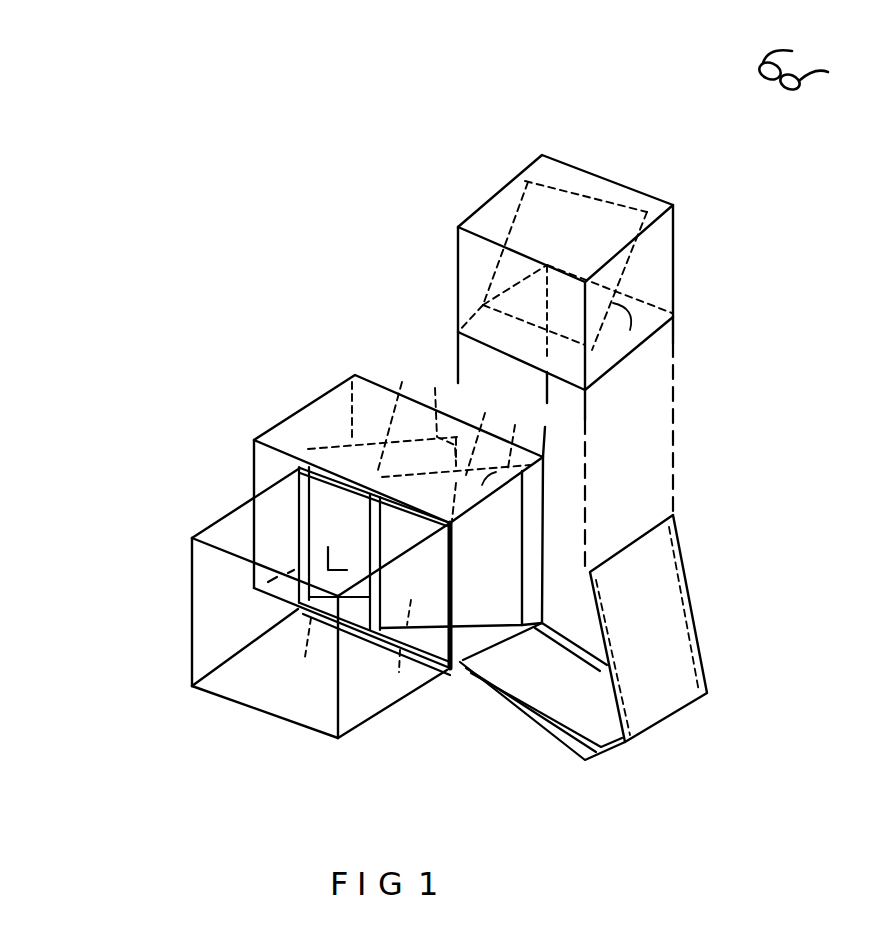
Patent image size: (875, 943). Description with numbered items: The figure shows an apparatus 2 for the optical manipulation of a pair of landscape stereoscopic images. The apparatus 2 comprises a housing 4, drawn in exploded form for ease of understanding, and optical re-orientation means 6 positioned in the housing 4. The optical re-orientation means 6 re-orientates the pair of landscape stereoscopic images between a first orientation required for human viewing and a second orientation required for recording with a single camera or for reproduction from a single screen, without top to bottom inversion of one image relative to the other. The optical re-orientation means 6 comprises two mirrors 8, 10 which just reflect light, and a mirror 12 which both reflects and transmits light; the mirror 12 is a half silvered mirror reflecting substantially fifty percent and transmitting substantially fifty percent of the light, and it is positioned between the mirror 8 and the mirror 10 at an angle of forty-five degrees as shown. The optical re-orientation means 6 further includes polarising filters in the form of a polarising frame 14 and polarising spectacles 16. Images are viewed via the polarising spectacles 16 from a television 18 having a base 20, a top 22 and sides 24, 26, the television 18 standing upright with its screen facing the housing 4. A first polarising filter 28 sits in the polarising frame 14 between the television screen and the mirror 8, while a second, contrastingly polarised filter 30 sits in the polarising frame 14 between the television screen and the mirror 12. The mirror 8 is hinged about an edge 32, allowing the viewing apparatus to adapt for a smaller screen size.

The apparatus 2 is at (690, 263).
The housing 4 is at (320, 398).
The optical re-orientation means 6 is at (430, 273).
The mirror 8 is at (395, 412).
The mirror 10 is at (513, 178).
The mirror 12 is at (481, 433).
The polarising frame 14 is at (307, 503).
The polarising spectacles 16 is at (812, 63).
The television 18 is at (186, 593).
The base 20 is at (325, 740).
The top 22 is at (233, 528).
The side 24 is at (245, 627).
The side 26 is at (382, 694).
The first polarising filter 28 is at (304, 654).
The second polarising filter 30 is at (462, 681).
The edge 32 is at (440, 416).